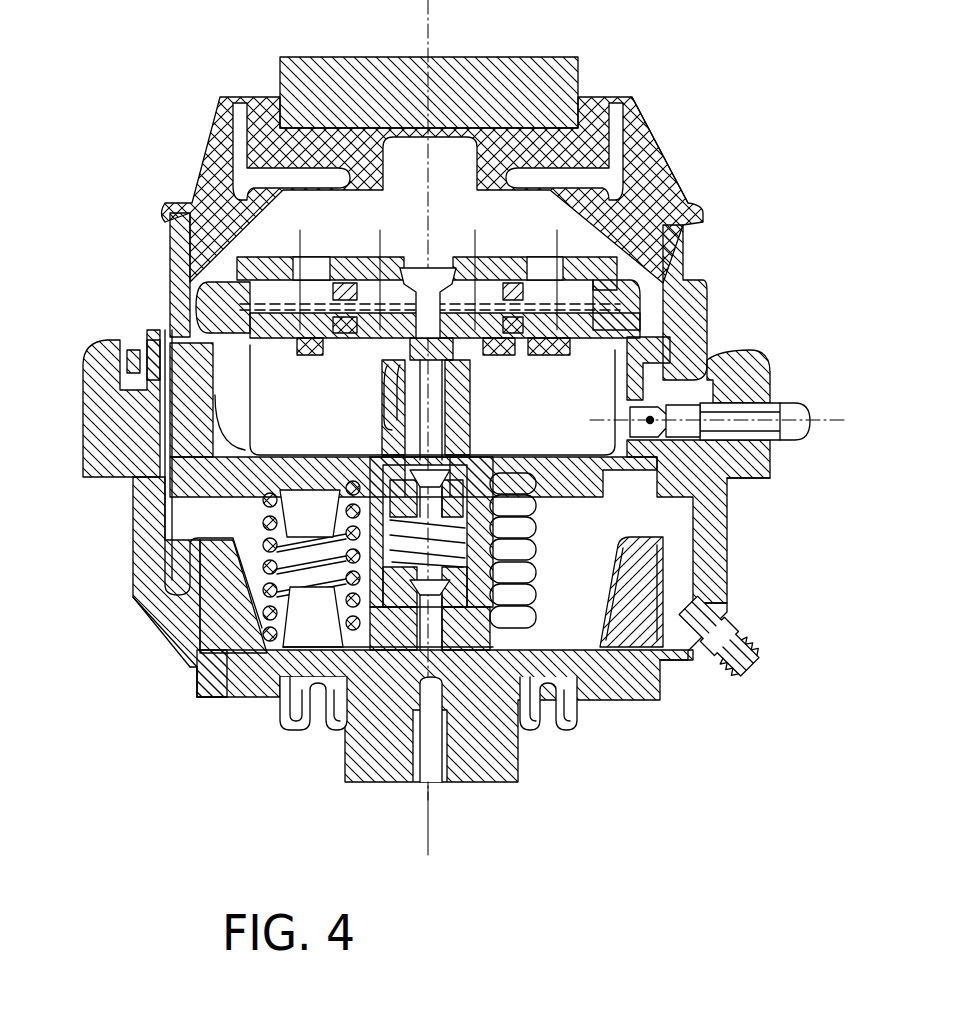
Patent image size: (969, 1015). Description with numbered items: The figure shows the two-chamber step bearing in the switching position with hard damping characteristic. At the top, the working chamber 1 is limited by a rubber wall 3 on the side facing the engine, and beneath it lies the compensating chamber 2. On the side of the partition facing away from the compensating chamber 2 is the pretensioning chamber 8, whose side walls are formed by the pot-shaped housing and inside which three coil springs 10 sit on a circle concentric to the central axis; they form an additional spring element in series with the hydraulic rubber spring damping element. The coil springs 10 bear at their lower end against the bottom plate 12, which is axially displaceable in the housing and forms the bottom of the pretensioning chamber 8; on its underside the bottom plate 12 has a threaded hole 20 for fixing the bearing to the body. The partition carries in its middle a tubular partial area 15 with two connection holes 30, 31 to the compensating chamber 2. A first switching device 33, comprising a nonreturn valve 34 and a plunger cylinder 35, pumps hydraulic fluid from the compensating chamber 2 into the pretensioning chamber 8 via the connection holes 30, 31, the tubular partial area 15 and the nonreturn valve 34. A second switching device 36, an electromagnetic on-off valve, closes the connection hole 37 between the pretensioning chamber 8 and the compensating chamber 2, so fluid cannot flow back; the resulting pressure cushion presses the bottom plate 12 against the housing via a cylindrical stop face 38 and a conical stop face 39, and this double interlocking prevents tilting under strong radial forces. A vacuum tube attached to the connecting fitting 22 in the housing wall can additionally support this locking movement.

The working chamber 1 is at (588, 236).
The compensating chamber 2 is at (682, 283).
The rubber wall 3 is at (593, 145).
The pretensioning chamber 8 is at (663, 520).
The coil springs 10 is at (258, 568).
The bottom plate 12 is at (220, 587).
The tubular partial area 15 is at (423, 373).
The threaded hole 20 is at (435, 750).
The connecting fitting 22 is at (723, 670).
The connection hole 30 is at (400, 325).
The connection hole 31 is at (568, 328).
The first switching device 33 is at (300, 533).
The nonreturn valve 34 is at (300, 478).
The plunger cylinder 35 is at (320, 710).
The second switching device 36 is at (677, 420).
The connection hole 37 is at (732, 480).
The cylindrical stop face 38 is at (217, 657).
The conical stop face 39 is at (203, 623).